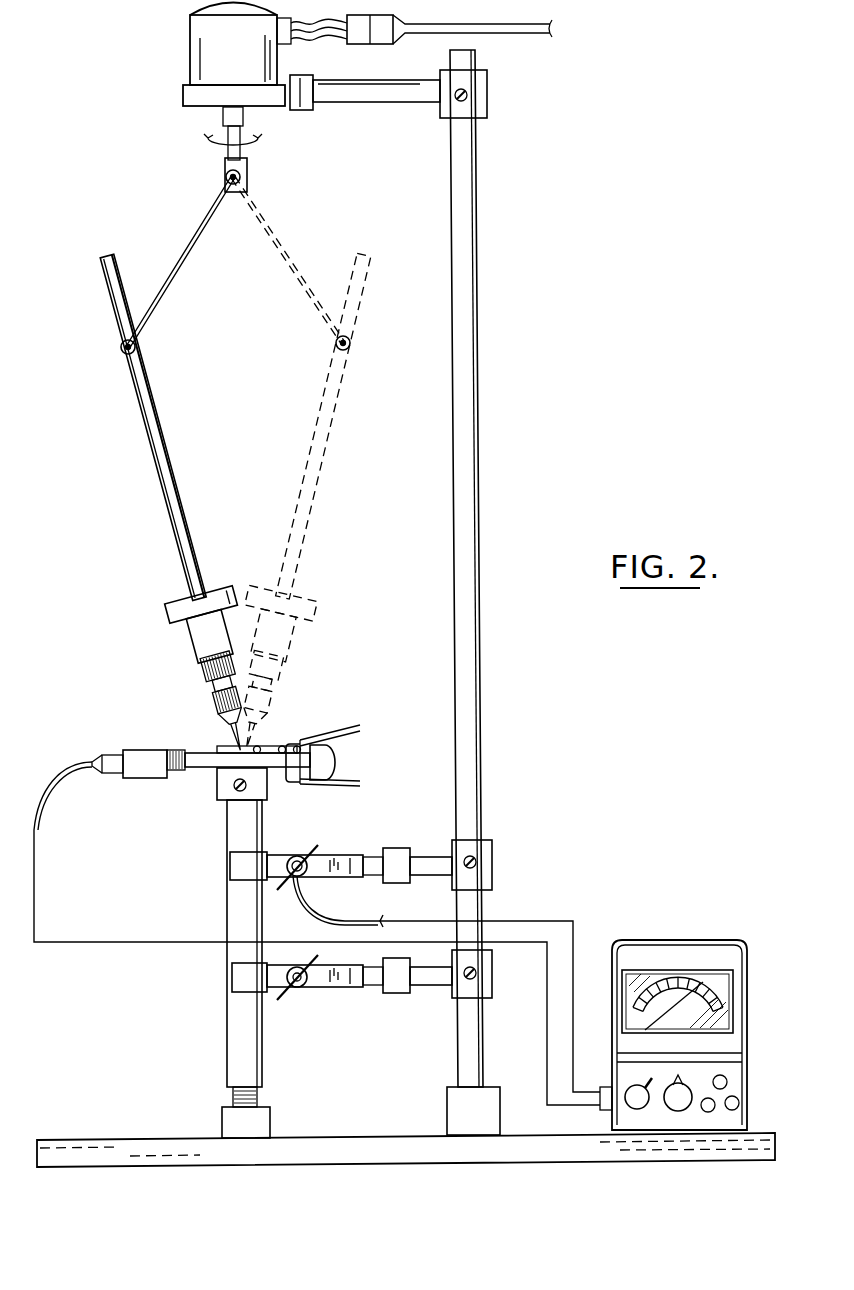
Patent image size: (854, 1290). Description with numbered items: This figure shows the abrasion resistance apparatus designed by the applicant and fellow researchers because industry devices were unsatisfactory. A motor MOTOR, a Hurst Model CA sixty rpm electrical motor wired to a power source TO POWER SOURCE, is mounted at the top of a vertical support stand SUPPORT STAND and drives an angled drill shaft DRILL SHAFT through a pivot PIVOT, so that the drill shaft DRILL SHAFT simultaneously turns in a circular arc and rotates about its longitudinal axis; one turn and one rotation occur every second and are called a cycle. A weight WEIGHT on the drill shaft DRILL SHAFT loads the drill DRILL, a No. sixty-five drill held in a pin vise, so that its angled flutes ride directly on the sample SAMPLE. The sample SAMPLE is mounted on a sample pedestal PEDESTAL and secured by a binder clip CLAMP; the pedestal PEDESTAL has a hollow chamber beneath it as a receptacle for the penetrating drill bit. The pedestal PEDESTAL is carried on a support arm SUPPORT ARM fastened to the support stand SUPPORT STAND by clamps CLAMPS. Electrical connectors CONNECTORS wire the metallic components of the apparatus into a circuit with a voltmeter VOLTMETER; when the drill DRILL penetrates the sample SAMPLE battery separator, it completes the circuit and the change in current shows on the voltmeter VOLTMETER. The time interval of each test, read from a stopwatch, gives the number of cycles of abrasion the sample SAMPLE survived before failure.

The motor MOTOR is at (222, 37).
The power source connection TO POWER SOURCE is at (551, 29).
The pivot PIVOT is at (241, 178).
The support stand SUPPORT STAND is at (463, 372).
The drill shaft DRILL SHAFT is at (176, 518).
The weight WEIGHT is at (187, 612).
The drill DRILL is at (238, 752).
The sample pedestal PEDESTAL is at (205, 760).
The sample SAMPLE is at (268, 748).
The binder clip CLAMP is at (333, 756).
The connectors CONNECTORS is at (290, 860).
The support arm SUPPORT ARM is at (431, 862).
The clamps CLAMPS is at (250, 975).
The voltmeter VOLTMETER is at (673, 1035).